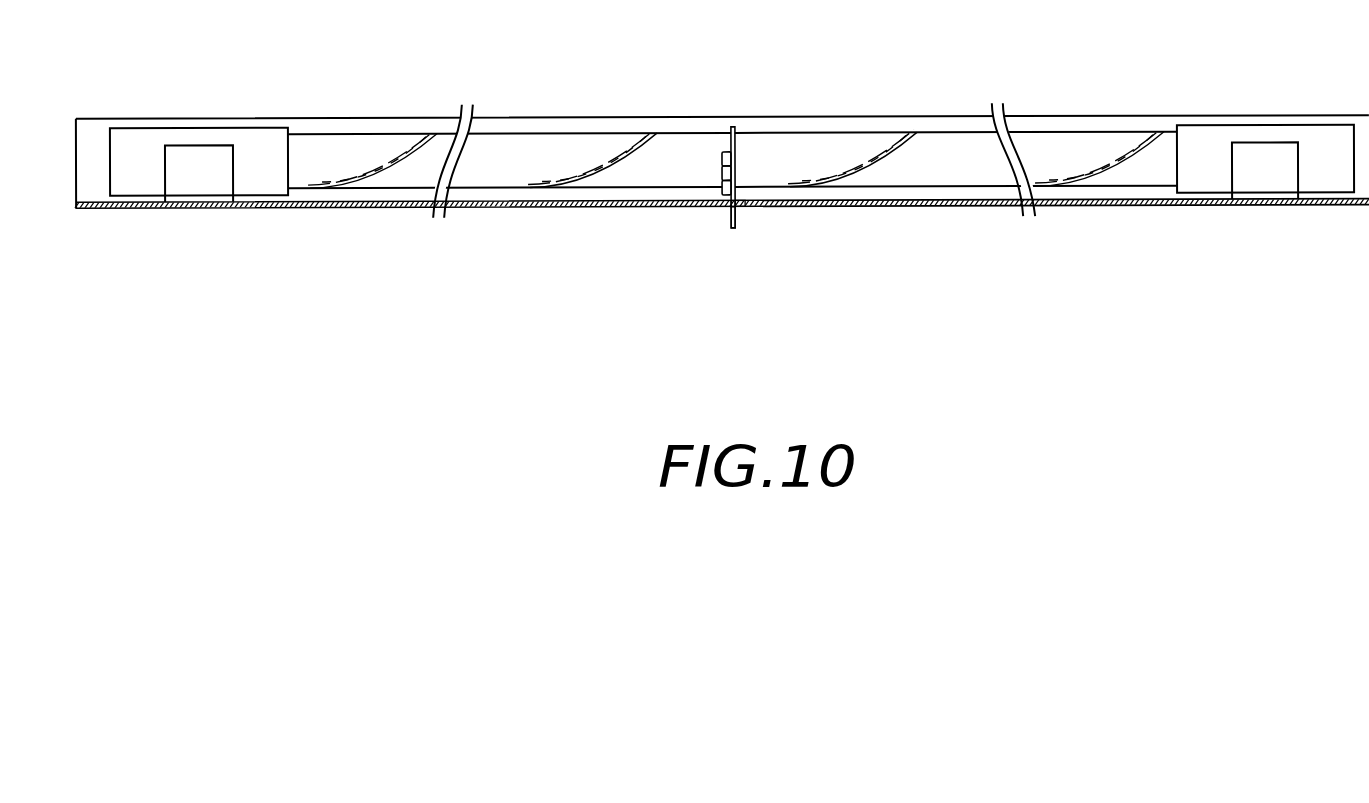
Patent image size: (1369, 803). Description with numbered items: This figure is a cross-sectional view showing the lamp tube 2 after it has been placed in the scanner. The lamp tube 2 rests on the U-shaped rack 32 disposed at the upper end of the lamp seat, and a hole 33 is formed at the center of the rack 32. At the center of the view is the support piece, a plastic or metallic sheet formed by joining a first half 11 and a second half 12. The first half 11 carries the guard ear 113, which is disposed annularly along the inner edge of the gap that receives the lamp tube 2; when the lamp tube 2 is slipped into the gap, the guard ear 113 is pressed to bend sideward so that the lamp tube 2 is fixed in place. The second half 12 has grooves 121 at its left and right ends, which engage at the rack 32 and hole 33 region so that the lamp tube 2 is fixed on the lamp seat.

The lamp tube 2 is at (613, 143).
The first half 11 is at (737, 140).
The guard ear 113 is at (726, 180).
The second half 12 is at (737, 207).
The grooves 121 is at (736, 207).
The hole 33 is at (740, 207).
The rack 32 is at (885, 207).